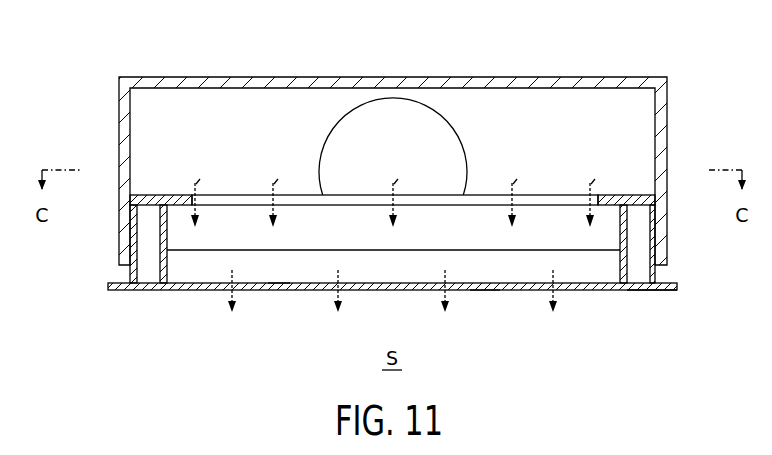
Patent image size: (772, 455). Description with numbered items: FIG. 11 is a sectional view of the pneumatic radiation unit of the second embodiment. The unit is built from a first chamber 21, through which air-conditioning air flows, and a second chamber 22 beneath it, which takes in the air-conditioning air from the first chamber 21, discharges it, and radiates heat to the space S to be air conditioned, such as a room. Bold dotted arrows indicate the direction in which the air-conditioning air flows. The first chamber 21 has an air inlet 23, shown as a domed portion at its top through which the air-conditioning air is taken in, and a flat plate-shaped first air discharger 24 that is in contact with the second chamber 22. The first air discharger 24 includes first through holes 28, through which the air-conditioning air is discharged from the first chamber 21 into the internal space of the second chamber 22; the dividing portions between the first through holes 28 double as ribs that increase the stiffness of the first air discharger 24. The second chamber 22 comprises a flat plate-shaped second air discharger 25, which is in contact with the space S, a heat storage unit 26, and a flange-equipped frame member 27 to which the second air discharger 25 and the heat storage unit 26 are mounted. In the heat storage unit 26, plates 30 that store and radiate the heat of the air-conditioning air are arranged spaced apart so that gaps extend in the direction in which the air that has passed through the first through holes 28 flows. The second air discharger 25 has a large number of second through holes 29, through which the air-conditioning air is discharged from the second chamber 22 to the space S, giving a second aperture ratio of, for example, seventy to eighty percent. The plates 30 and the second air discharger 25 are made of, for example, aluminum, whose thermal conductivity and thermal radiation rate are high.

The first chamber 21 is at (511, 70).
The second chamber 22 is at (519, 295).
The air inlet 23 is at (391, 96).
The first air discharger 24 is at (607, 193).
The second air discharger 25 is at (485, 291).
The heat storage unit 26 is at (329, 246).
The flange-equipped frame member 27 is at (635, 291).
The first through holes 28 is at (543, 193).
The second through holes 29 is at (203, 291).
The plates 30 is at (278, 272).